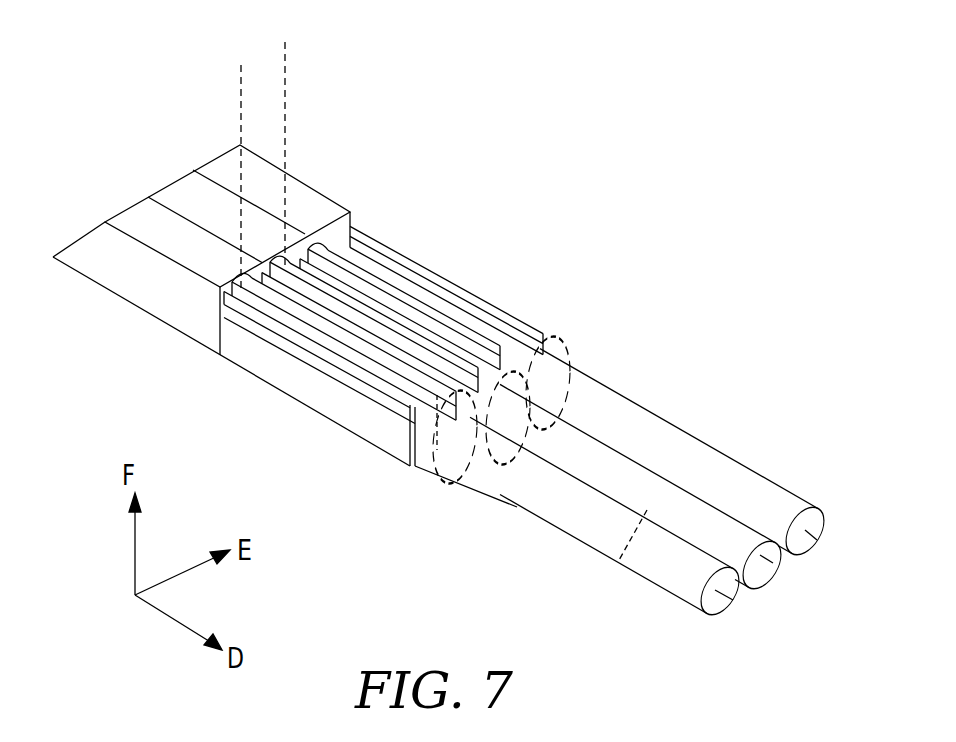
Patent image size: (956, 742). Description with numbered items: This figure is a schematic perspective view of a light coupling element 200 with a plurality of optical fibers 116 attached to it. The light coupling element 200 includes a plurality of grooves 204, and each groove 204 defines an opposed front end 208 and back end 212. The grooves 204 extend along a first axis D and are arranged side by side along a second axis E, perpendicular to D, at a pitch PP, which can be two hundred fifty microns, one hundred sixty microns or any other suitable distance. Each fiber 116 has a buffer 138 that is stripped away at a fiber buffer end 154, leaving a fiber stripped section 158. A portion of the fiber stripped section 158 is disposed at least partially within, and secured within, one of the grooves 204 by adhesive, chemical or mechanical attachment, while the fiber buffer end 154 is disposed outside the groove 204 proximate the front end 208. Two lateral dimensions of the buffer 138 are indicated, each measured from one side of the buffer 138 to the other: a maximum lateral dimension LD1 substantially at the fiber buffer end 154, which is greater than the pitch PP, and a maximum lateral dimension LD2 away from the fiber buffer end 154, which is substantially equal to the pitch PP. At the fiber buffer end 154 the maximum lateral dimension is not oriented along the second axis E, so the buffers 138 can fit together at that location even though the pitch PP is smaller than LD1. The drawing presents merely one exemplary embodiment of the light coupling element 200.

The light coupling element 200 is at (153, 283).
The grooves 204 is at (330, 332).
The back end 212 is at (320, 238).
The fiber buffer end 154 is at (512, 330).
The fiber stripped section 158 is at (400, 338).
The front end 208 is at (420, 458).
The buffer 138 is at (683, 547).
The fiber 116 is at (817, 540).
The pitch PP is at (200, 112).
The maximum lateral dimension of the buffer at the fiber buffer end LD1 is at (437, 452).
The maximum lateral dimension of the buffer away from the fiber buffer end LD2 is at (633, 538).